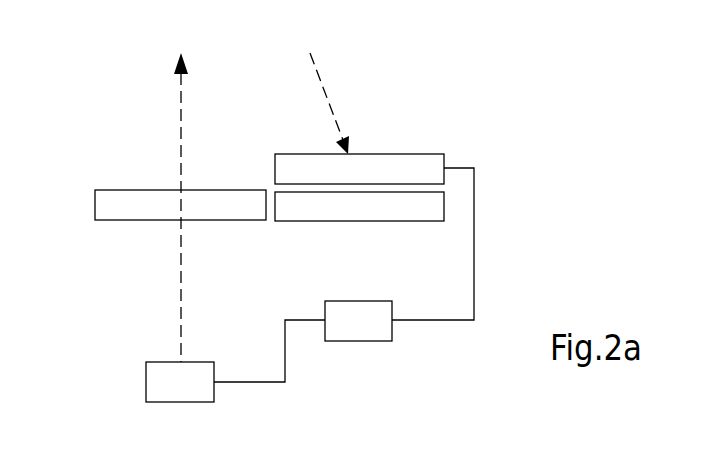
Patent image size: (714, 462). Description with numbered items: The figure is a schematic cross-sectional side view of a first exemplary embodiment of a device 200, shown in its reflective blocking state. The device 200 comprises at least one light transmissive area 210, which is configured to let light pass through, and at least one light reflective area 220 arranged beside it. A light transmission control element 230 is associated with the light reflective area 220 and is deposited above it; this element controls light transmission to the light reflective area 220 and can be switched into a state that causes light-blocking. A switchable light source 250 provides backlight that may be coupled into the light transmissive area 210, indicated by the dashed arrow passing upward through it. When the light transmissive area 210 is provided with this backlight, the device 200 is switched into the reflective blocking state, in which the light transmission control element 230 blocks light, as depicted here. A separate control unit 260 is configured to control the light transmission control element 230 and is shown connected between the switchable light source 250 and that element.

The device 200 is at (494, 96).
The light transmissive area 210 is at (95, 203).
The light reflective area 220 is at (407, 221).
The light transmission control element 230 is at (422, 154).
The switchable light source 250 is at (146, 380).
The control unit 260 is at (358, 341).